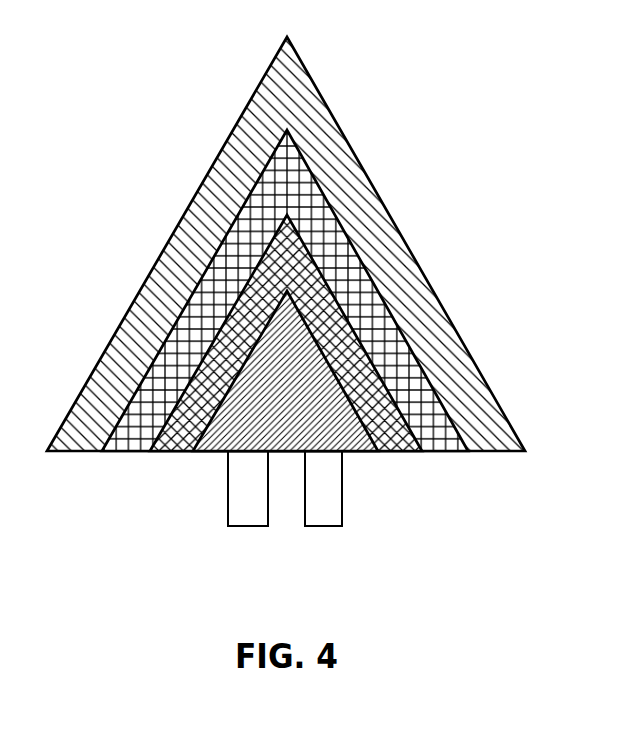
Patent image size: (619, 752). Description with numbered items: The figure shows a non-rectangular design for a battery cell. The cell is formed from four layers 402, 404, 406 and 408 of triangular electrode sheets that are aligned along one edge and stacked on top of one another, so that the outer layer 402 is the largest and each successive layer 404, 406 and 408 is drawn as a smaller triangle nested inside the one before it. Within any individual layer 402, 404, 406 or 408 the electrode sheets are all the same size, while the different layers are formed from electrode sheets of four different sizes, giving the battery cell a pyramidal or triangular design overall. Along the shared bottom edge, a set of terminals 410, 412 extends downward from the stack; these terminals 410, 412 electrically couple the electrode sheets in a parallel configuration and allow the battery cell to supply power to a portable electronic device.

The layer 402 is at (398, 282).
The layer 404 is at (398, 375).
The layer 406 is at (387, 430).
The layer 408 is at (222, 453).
The terminal 410 is at (248, 507).
The terminal 412 is at (330, 507).